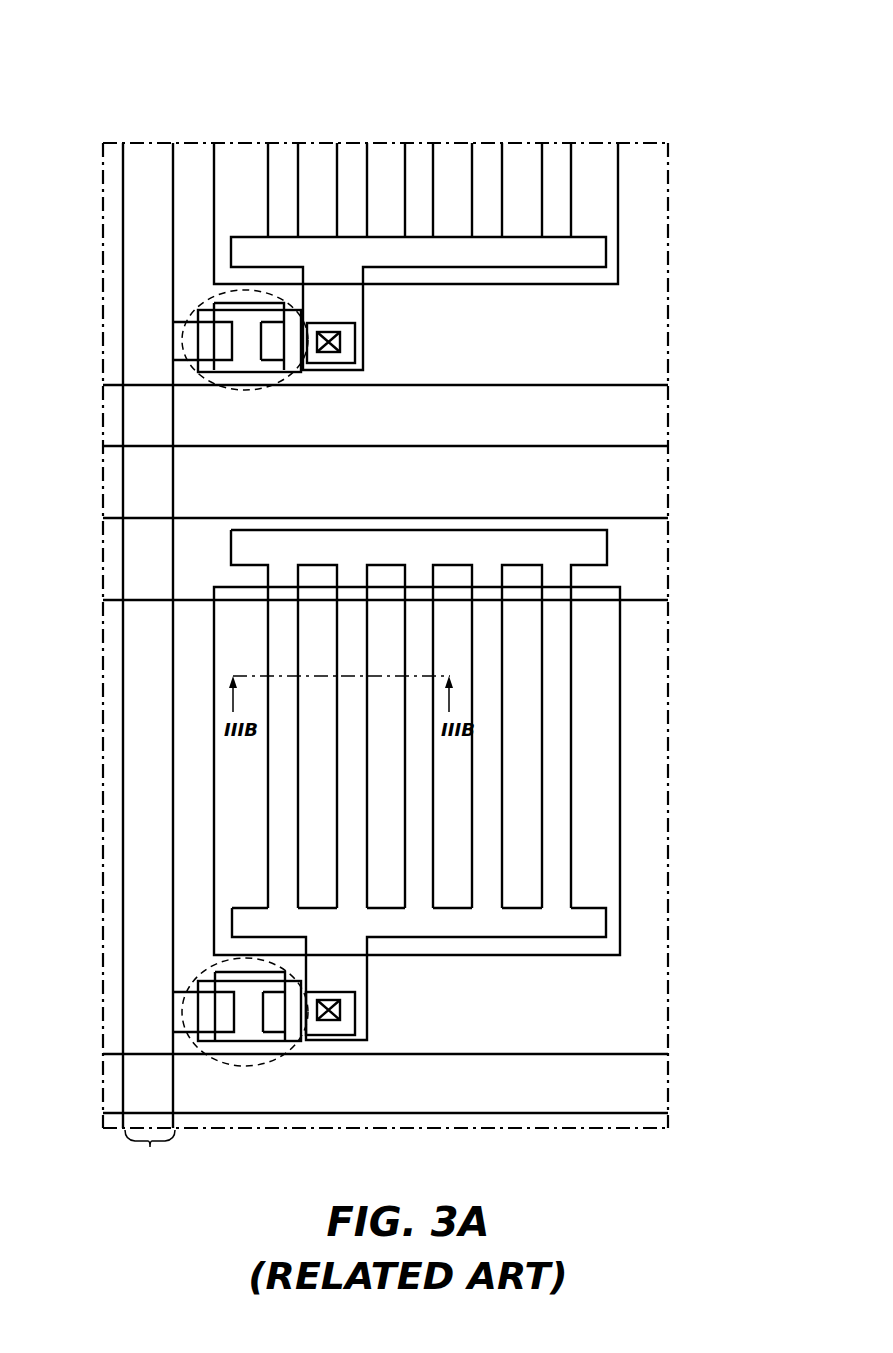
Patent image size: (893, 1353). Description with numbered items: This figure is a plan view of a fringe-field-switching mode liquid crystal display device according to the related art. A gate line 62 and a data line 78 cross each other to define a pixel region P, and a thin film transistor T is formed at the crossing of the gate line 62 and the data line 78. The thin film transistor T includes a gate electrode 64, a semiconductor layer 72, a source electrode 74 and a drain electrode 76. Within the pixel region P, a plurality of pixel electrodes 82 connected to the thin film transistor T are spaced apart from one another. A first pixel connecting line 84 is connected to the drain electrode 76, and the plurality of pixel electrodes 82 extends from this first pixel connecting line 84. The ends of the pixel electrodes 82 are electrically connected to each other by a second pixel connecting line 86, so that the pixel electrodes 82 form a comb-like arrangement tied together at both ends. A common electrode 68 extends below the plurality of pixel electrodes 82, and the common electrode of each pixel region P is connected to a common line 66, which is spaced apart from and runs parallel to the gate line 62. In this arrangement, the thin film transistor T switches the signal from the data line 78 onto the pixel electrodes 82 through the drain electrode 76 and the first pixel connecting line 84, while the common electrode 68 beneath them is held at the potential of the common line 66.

The gate line 62 is at (668, 385).
The gate electrode 64 is at (267, 1055).
The common line 66 is at (103, 518).
The common electrode 68 is at (618, 215).
The semiconductor layer 72 is at (234, 1043).
The source electrode 74 is at (223, 1022).
The drain electrode 76 is at (275, 1017).
The data line 78 is at (150, 1151).
The pixel electrodes 82 is at (553, 155).
The first pixel connecting line 84 is at (606, 252).
The second pixel connecting line 86 is at (607, 548).
The pixel region P is at (180, 213).
The thin film transistor T is at (248, 395).